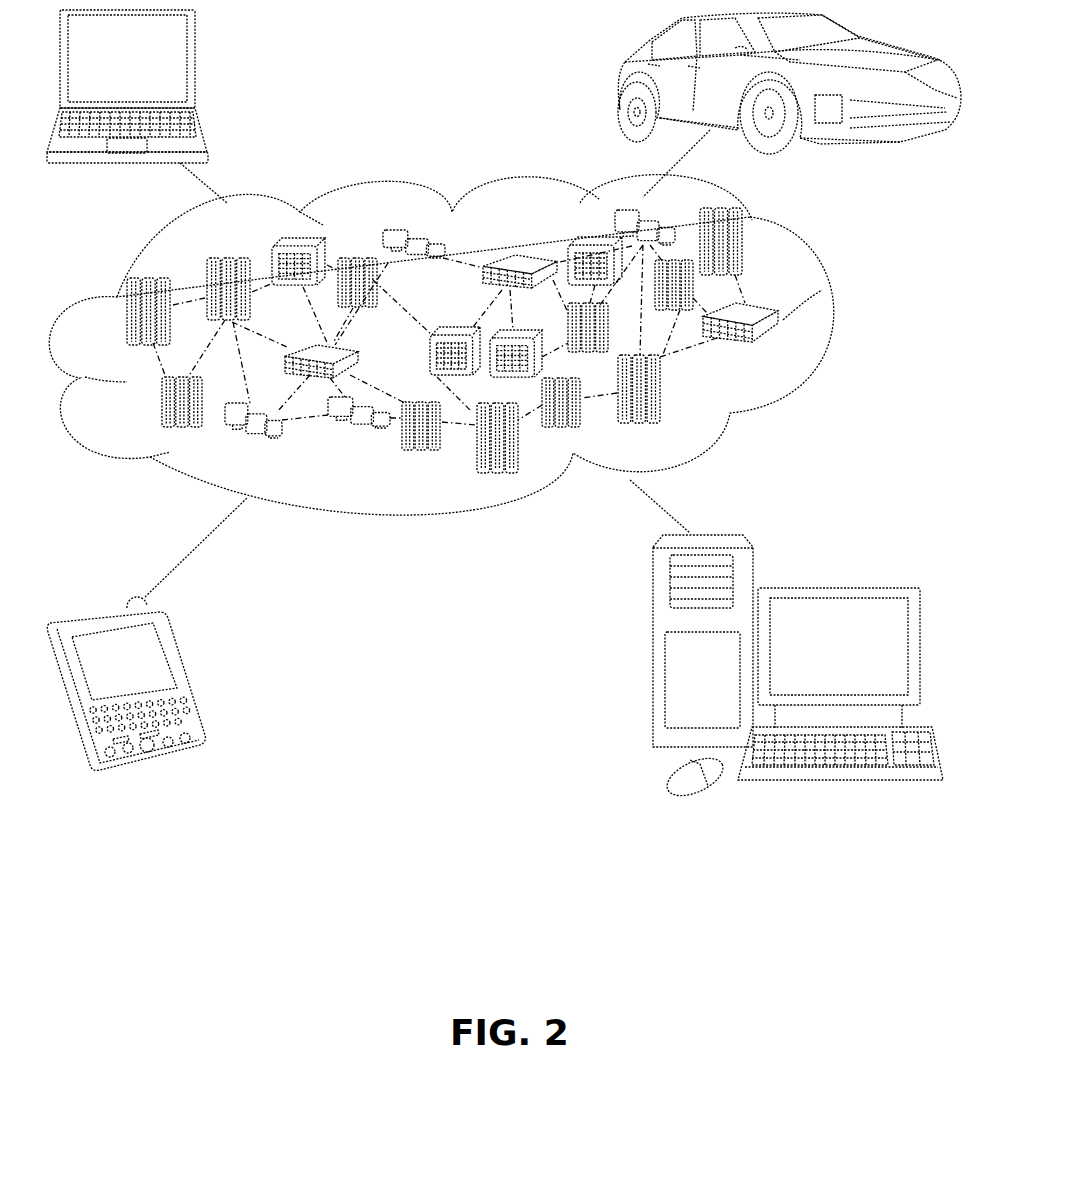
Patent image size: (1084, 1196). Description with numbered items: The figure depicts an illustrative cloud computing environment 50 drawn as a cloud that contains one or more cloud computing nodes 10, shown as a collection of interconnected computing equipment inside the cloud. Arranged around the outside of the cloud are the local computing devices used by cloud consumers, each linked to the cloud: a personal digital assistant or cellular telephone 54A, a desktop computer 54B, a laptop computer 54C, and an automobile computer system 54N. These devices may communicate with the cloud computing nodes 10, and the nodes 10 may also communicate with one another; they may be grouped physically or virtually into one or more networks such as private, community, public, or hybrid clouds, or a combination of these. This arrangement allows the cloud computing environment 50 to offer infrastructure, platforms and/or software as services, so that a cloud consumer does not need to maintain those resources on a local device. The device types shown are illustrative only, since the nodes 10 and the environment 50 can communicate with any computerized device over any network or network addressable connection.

The cloud computing node 10 is at (780, 349).
The cloud computing environment 50 is at (835, 320).
The personal digital assistant (PDA) or cellular telephone 54A is at (187, 673).
The desktop computer 54B is at (837, 587).
The laptop computer 54C is at (197, 68).
The automobile computer system 54N is at (622, 86).